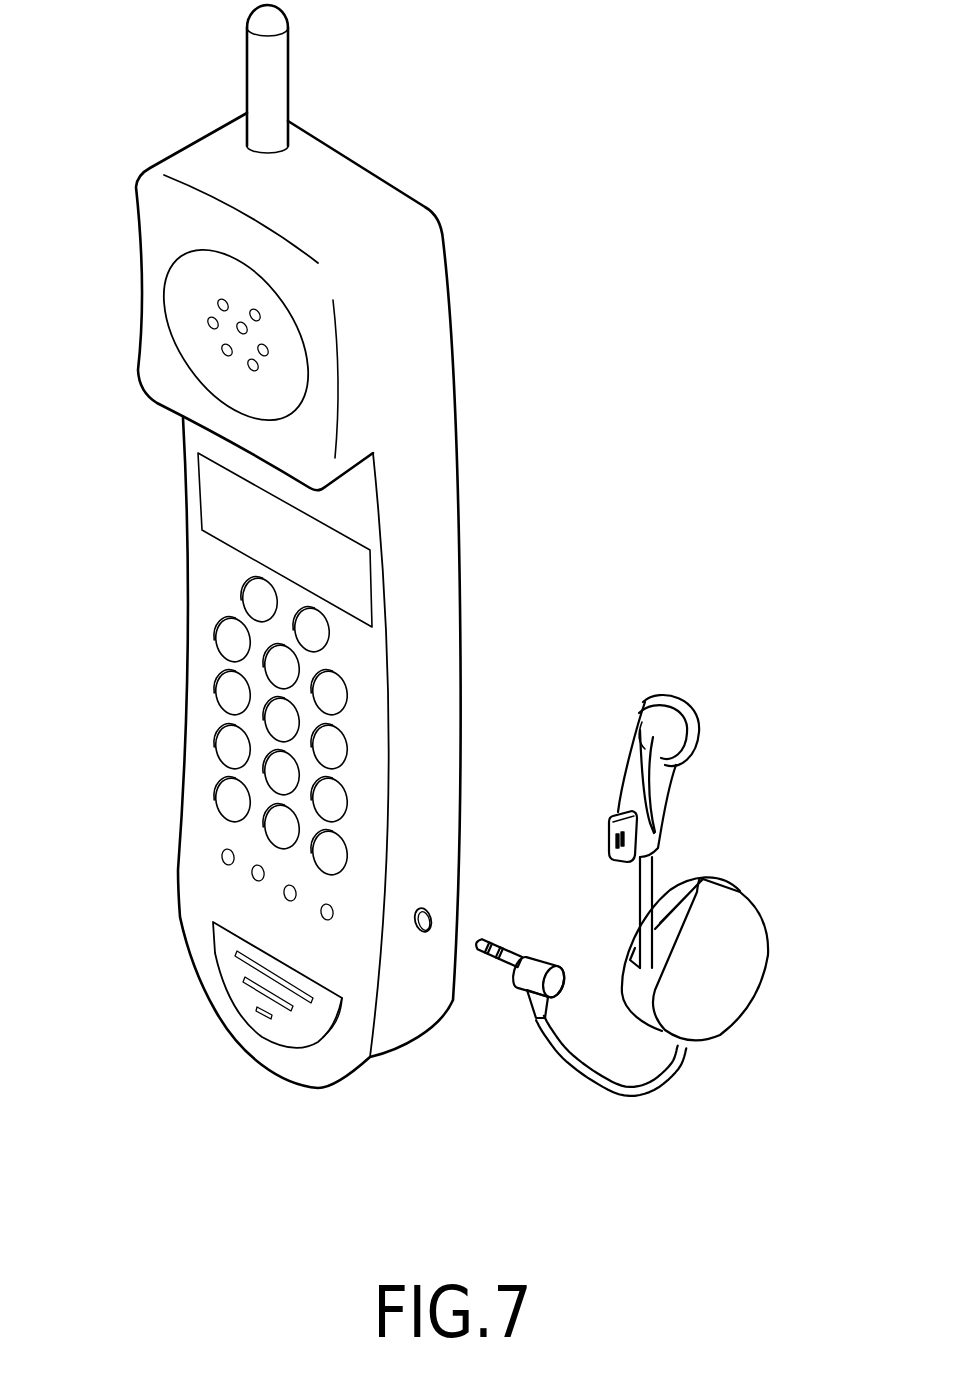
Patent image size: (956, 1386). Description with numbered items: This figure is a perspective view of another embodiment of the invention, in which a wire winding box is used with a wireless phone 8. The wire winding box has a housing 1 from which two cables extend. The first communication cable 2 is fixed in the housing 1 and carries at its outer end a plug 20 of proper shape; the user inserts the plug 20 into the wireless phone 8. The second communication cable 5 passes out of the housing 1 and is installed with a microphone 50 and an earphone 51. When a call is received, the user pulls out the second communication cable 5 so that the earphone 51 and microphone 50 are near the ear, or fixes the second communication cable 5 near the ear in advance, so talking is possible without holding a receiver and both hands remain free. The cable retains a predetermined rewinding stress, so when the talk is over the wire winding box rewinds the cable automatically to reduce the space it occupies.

The wireless phone 8 is at (210, 575).
The earphone 51 is at (687, 722).
The second communication cable 5 is at (647, 880).
The microphone 50 is at (609, 822).
The housing 1 is at (747, 977).
The first communication cable 2 is at (612, 1092).
The plug 20 is at (546, 970).